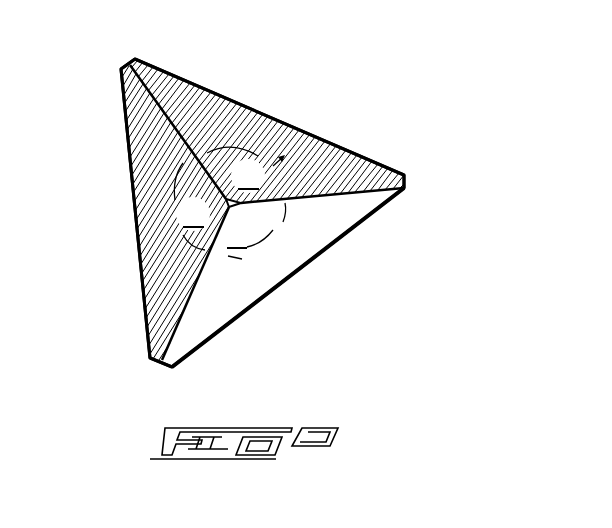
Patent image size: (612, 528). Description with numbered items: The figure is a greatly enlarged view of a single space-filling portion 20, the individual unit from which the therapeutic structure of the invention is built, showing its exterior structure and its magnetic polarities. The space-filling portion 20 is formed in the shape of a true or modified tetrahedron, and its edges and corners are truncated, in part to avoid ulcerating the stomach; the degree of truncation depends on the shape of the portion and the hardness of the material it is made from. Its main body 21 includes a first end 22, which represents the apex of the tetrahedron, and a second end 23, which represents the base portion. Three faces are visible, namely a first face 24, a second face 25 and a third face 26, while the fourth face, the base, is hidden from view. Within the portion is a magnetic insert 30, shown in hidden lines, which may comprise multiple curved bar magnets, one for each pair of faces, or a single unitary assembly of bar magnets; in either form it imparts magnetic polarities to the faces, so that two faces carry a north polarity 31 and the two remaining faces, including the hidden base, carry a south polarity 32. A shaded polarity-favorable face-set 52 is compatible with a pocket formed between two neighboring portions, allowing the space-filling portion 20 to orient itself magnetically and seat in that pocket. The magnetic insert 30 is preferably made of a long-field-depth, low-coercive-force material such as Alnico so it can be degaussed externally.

The space-filling portion 20 is at (426, 147).
The main body 21 is at (192, 318).
The first end 22 is at (222, 201).
The second end 23 is at (244, 94).
The first face 24 is at (200, 110).
The second face 25 is at (148, 275).
The third face 26 is at (213, 300).
The magnetic insert 30 is at (330, 126).
The north polarity 31 is at (150, 166).
The south polarity 32 is at (180, 222).
The polarity-favorable face-set 52 is at (167, 64).